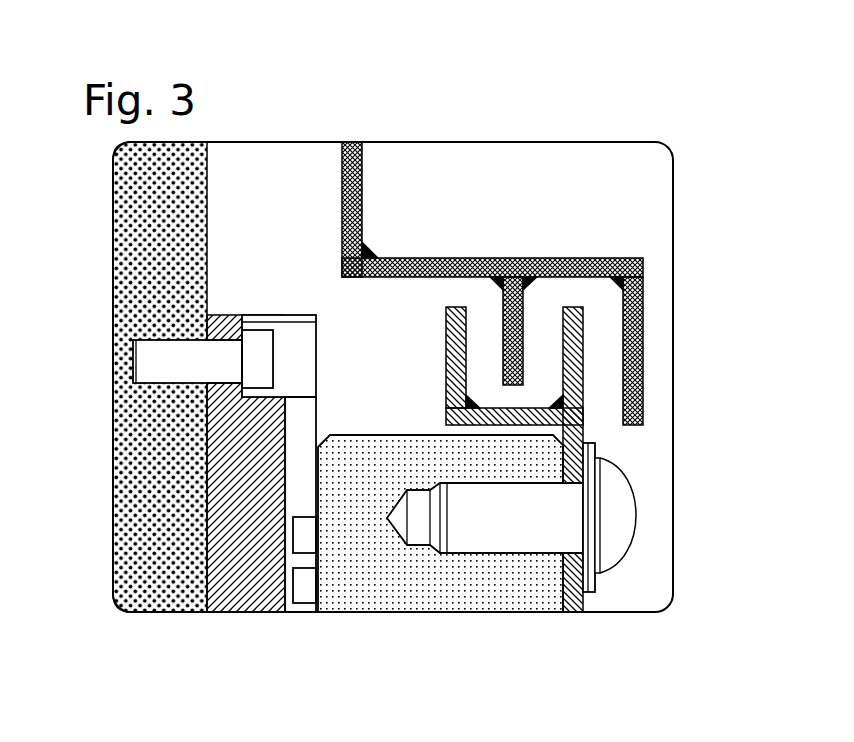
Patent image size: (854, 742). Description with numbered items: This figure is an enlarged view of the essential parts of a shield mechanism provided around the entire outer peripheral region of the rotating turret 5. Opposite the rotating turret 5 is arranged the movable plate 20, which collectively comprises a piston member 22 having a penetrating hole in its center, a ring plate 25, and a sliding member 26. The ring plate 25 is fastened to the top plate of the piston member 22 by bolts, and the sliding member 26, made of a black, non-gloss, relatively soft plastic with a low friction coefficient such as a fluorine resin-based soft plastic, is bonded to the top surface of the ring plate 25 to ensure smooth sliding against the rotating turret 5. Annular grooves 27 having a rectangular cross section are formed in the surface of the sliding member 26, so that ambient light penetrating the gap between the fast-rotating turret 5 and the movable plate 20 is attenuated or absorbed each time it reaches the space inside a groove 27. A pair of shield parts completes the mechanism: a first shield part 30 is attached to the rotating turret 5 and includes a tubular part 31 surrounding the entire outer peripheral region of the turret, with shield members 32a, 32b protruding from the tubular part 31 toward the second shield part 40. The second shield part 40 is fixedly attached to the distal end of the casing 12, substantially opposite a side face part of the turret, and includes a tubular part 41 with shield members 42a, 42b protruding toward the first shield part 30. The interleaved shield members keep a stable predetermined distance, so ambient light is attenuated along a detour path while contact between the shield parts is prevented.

The rotating turret 5 is at (395, 577).
The casing 12 is at (362, 192).
The movable plate 20 is at (247, 420).
The piston member 22 is at (160, 563).
The ring plate 25 is at (248, 558).
The sliding member 26 is at (290, 605).
The annular groove 27 is at (337, 587).
The first shield part 30 is at (512, 459).
The tubular part 31 is at (507, 427).
The shield member 32a is at (580, 420).
The shield member 32b is at (442, 368).
The second shield part 40 is at (533, 296).
The tubular part 41 is at (502, 258).
The shield member 42a is at (638, 348).
The shield member 42b is at (517, 325).